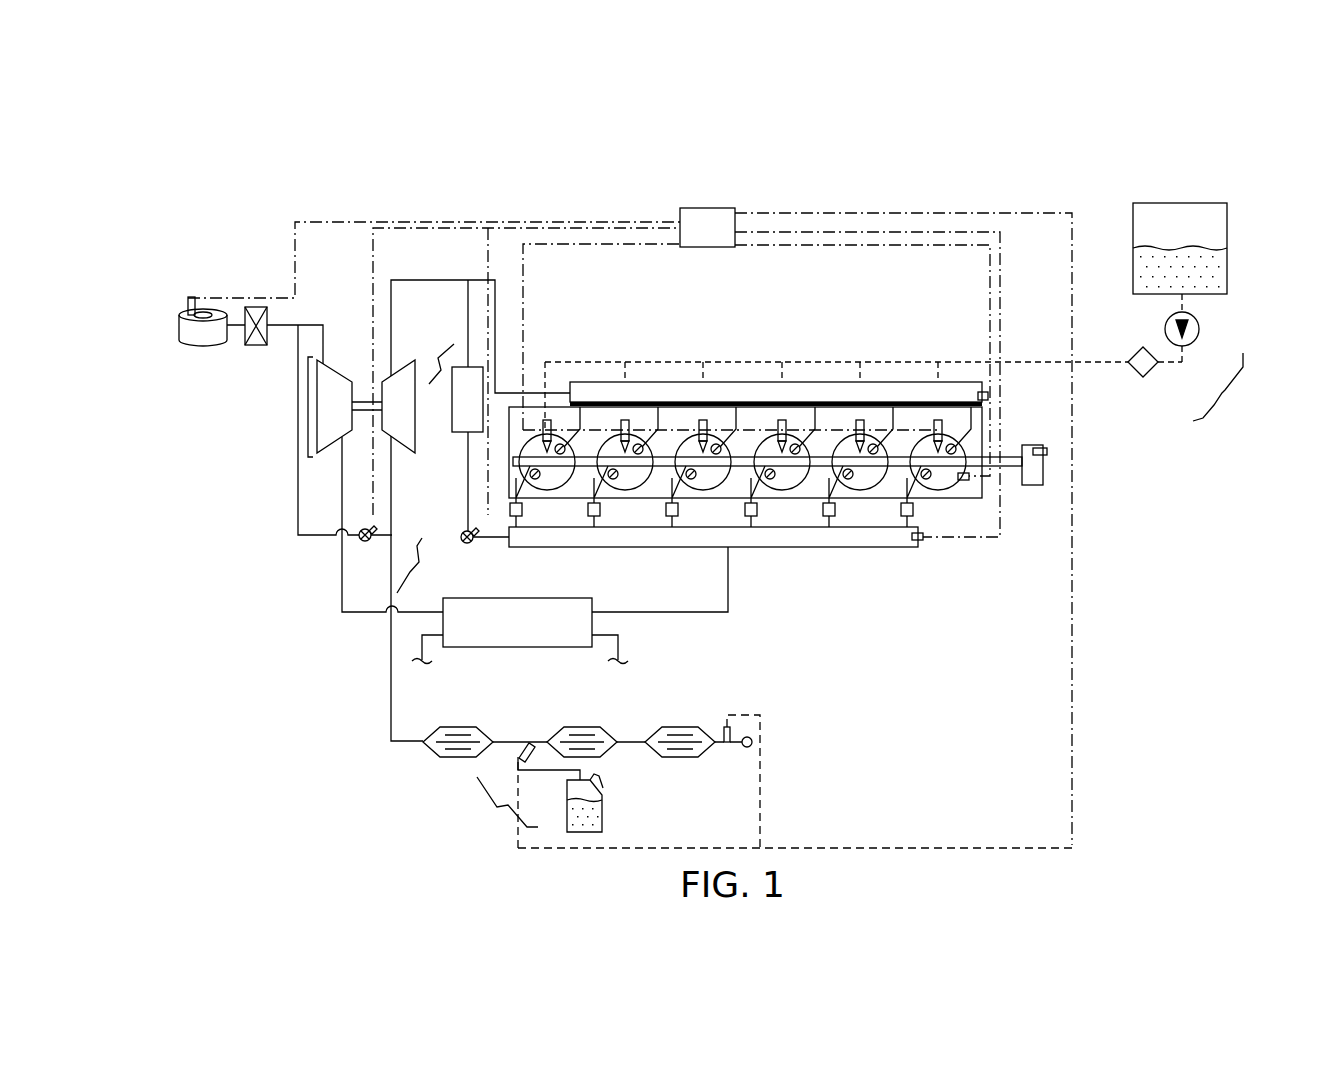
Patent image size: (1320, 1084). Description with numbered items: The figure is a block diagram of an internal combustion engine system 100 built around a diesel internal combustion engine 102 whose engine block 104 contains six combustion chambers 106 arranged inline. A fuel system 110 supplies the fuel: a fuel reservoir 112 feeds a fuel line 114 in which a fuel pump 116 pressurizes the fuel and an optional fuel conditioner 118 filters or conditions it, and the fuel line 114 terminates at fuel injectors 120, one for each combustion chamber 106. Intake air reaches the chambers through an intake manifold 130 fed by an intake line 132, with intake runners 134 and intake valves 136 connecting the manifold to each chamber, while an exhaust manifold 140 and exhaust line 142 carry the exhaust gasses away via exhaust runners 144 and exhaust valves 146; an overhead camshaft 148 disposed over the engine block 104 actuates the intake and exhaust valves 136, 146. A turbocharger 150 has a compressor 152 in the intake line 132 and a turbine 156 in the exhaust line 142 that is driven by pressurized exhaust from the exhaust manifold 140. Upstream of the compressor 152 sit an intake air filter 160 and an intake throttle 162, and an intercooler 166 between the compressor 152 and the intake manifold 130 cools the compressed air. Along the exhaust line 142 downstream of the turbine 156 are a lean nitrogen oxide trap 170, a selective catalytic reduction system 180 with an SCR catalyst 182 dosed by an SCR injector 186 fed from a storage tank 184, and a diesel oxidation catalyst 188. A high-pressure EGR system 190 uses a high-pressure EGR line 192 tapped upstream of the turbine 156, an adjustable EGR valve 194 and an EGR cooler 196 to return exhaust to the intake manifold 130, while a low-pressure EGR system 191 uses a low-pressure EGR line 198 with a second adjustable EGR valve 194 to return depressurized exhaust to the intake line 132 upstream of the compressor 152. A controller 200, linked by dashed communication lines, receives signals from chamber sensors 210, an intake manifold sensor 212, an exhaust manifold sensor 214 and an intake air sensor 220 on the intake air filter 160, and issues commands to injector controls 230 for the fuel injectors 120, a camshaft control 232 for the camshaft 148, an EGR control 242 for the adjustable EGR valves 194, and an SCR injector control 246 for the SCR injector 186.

The internal combustion engine system 100 is at (313, 188).
The internal combustion engine 102 is at (834, 456).
The engine block 104 is at (985, 505).
The combustion chambers 106 is at (743, 460).
The fuel system 110 is at (916, 297).
The fuel reservoir 112 is at (1205, 228).
The fuel line 114 is at (1100, 362).
The fuel pump 116 is at (1199, 328).
The fuel conditioner 118 is at (1152, 370).
The fuel injectors 120 is at (780, 427).
The intake manifold 130 is at (868, 543).
The intake line 132 is at (702, 613).
The intake runners 134 is at (765, 487).
The intake valves 136 is at (758, 478).
The exhaust manifold 140 is at (895, 393).
The exhaust line 142 is at (532, 392).
The exhaust runners 144 is at (823, 413).
The exhaust valves 146 is at (812, 450).
The overhead camshaft 148 is at (1005, 465).
The turbocharger 150 is at (335, 399).
The compressor 152 is at (335, 372).
The turbine 156 is at (416, 430).
The intake air filter 160 is at (182, 328).
The intake throttle 162 is at (252, 345).
The intercooler 166 is at (517, 648).
The lean nitrogen oxide trap 170 is at (460, 727).
The selective catalytic reduction system 180 is at (575, 642).
The SCR catalyst 182 is at (582, 727).
The storage tank 184 is at (603, 808).
The SCR injector 186 is at (523, 745).
The diesel oxidation catalyst 188 is at (678, 727).
The high-pressure EGR system 190 is at (426, 358).
The low-pressure EGR system 191 is at (432, 565).
The high-pressure EGR line 192 is at (468, 310).
The adjustable EGR valve 194 is at (365, 544).
The EGR cooler 196 is at (462, 365).
The low-pressure EGR line 198 is at (297, 501).
The controller 200 is at (697, 208).
The chamber sensors 210 is at (963, 481).
The intake manifold sensor 212 is at (920, 541).
The exhaust manifold sensor 214 is at (989, 399).
The intake air sensor 220 is at (197, 297).
The injector controls 230 is at (786, 432).
The camshaft control 232 is at (1047, 452).
The EGR control 242 is at (375, 525).
The SCR injector control 246 is at (518, 758).